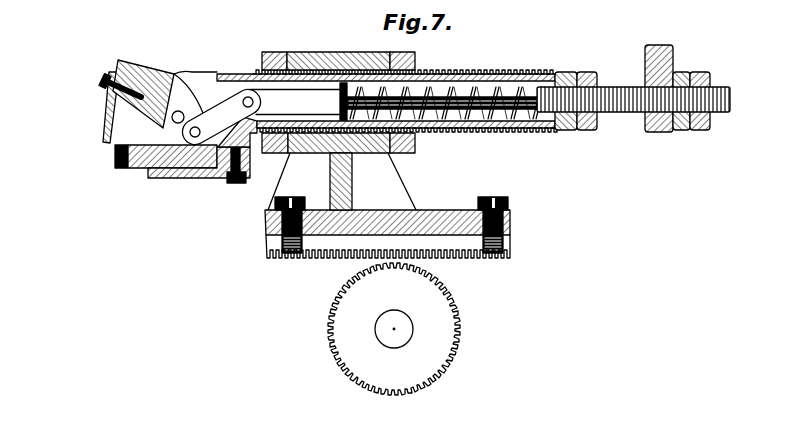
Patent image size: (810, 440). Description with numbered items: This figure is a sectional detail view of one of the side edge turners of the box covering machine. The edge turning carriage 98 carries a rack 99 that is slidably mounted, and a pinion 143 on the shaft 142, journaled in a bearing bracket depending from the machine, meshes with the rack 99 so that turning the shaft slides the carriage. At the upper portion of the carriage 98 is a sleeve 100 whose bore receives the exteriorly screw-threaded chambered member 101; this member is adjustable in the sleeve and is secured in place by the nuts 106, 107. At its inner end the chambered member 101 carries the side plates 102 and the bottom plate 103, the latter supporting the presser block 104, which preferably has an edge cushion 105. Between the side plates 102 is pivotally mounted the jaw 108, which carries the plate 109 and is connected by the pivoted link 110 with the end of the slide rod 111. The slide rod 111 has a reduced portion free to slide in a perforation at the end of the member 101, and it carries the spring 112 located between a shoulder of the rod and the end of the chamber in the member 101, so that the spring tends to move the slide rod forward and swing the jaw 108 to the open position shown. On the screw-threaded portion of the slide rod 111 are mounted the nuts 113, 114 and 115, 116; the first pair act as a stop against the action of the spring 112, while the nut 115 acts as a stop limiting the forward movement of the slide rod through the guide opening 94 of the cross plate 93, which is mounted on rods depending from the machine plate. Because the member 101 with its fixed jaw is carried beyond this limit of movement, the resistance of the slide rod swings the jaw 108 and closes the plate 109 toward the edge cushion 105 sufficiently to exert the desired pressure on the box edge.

The cross plate 93 is at (673, 47).
The guide opening 94 is at (643, 87).
The edge turning carriage 98 is at (420, 212).
The rack 99 is at (464, 266).
The sleeve 100 is at (318, 53).
The chambered member 101 is at (480, 131).
The side plate 102 is at (203, 76).
The bottom plate 103 is at (198, 178).
The presser block 104 is at (143, 169).
The edge cushion 105 is at (116, 167).
The nut 106 is at (276, 154).
The nut 107 is at (411, 150).
The jaw 108 is at (166, 72).
The plate 109 is at (104, 115).
The pivoted link 110 is at (191, 123).
The slide rod 111 is at (262, 86).
The spring 112 is at (464, 73).
The nut 113 is at (560, 72).
The nut 114 is at (584, 72).
The nut 115 is at (679, 72).
The nut 116 is at (701, 73).
The shaft 142 is at (411, 333).
The pinion 143 is at (462, 326).